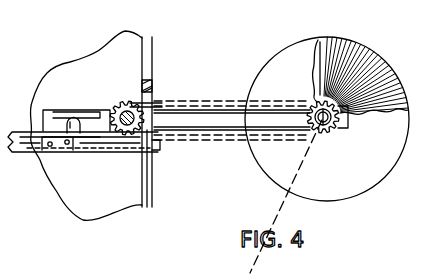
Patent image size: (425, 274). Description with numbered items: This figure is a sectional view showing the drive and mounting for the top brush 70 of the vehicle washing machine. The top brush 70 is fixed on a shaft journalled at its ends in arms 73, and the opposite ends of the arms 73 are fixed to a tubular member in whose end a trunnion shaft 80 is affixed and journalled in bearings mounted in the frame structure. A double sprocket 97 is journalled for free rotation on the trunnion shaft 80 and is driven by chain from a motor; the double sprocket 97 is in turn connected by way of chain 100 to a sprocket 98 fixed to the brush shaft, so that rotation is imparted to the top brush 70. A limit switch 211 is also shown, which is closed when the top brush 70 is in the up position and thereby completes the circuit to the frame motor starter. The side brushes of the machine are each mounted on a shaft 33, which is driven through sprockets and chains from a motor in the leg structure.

The shaft 33 is at (320, 132).
The top brush 70 is at (336, 44).
The arms 73 is at (200, 117).
The trunnion shaft 80 is at (118, 106).
The double sprocket 97 is at (152, 103).
The sprocket 98 is at (333, 132).
The chain 100 is at (226, 105).
The switch 211 is at (55, 153).